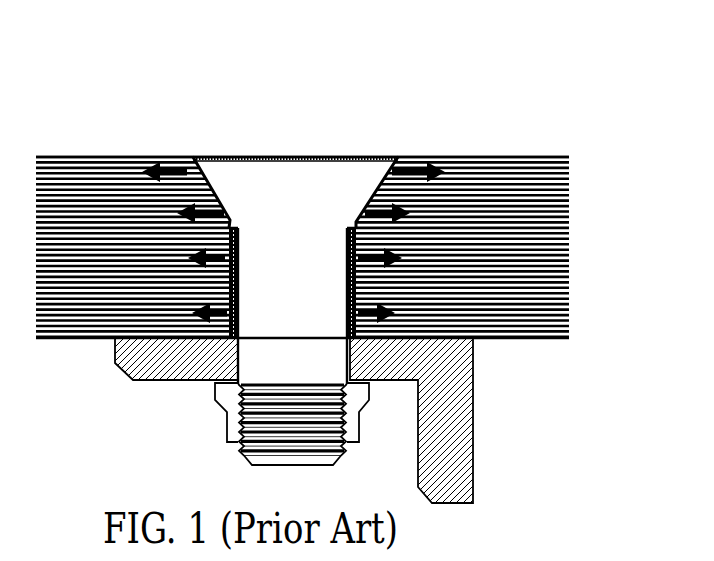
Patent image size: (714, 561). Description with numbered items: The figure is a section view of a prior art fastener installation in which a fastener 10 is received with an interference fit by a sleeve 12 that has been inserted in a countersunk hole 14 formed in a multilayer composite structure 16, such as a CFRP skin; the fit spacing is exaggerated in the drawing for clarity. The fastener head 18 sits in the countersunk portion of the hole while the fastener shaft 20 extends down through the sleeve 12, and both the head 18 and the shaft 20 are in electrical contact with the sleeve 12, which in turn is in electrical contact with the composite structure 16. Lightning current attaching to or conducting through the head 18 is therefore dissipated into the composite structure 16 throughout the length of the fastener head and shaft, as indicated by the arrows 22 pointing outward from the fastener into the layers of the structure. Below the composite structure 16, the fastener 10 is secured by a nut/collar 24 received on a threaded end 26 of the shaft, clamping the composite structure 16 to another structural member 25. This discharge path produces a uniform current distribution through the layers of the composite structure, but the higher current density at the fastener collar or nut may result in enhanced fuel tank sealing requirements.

The fastener 10 is at (330, 157).
The sleeve 12 is at (386, 190).
The countersunk hole 14 is at (215, 378).
The multilayer composite structure 16 is at (532, 192).
The fastener head 18 is at (267, 180).
The fastener shaft 20 is at (305, 273).
The arrows 22 is at (188, 203).
The nut/collar 24 is at (214, 408).
The structural member 25 is at (463, 393).
The threaded end 26 is at (292, 435).